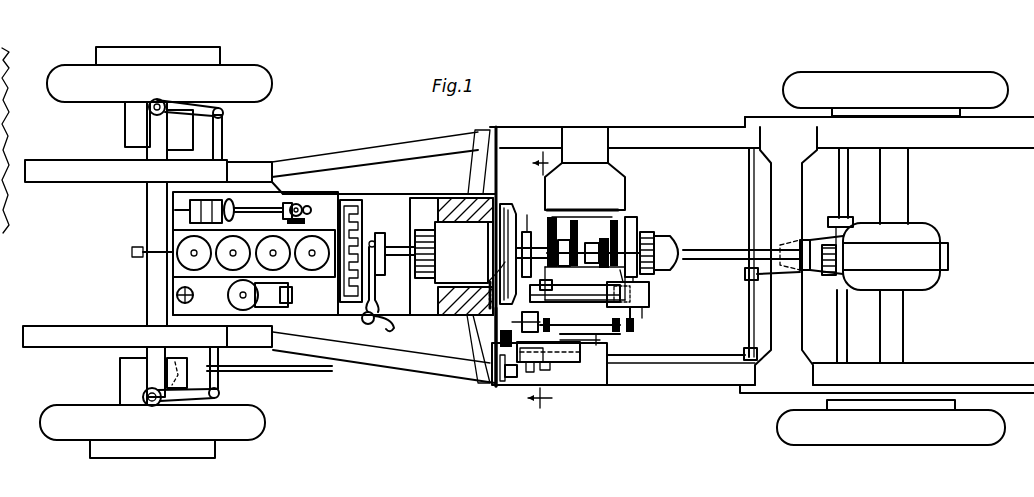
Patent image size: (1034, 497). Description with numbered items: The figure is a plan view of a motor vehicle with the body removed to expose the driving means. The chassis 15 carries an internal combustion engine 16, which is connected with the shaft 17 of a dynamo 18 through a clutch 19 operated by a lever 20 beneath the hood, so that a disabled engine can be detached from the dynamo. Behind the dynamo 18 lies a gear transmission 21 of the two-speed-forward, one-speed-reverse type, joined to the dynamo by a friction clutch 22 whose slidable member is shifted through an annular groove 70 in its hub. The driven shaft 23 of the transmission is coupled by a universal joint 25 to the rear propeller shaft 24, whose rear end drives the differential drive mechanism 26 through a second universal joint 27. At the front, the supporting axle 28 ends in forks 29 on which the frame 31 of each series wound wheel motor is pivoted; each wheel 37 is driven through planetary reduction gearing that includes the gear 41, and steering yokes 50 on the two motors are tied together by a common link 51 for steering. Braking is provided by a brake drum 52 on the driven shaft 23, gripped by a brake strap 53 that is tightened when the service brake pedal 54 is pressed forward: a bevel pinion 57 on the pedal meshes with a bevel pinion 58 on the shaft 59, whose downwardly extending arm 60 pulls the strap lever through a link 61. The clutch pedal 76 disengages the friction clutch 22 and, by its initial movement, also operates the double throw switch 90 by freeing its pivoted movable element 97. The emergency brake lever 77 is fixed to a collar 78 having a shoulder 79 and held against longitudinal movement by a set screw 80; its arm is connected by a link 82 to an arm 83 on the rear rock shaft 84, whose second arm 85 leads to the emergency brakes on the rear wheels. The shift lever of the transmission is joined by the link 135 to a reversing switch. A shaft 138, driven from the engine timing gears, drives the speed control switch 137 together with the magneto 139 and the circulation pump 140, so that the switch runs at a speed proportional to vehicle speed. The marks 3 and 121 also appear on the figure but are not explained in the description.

The section line 3 is at (540, 280).
The chassis 15 is at (643, 378).
The internal combustion engine 16 is at (300, 294).
The shaft 17 is at (395, 252).
The dynamo 18 is at (451, 256).
The clutch 19 is at (362, 208).
The lever 20 is at (394, 325).
The gear transmission 21 is at (615, 215).
The friction clutch 22 is at (503, 205).
The driven shaft 23 is at (653, 280).
The rear propeller shaft 24 is at (716, 243).
The universal joint 25 is at (656, 244).
The differential drive mechanism 26 is at (912, 265).
The universal joint 27 is at (811, 240).
The front supporting axle 28 is at (152, 296).
The fork 29 is at (158, 147).
The motor frame 31 is at (137, 118).
The wheel 37 is at (266, 88).
The gear 41 is at (493, 270).
The steering yoke 50 is at (212, 118).
The common link 51 is at (218, 383).
The brake drum 52 is at (650, 290).
The brake strap 53 is at (633, 226).
The service brake pedal 54 is at (497, 355).
The bevel pinion 57 is at (519, 329).
The bevel pinion 58 is at (580, 339).
The shaft 59 is at (590, 332).
The downwardly extending arm 60 is at (620, 335).
The link 61 is at (633, 318).
The annular groove 70 is at (531, 240).
The clutch pedal 76 is at (490, 383).
The emergency brake lever 77 is at (512, 387).
The collar 78 is at (540, 372).
The shoulder 79 is at (609, 342).
The set screw 80 is at (562, 354).
The link 82 is at (706, 355).
The arm 83 is at (758, 352).
The rock shaft 84 is at (749, 300).
The second arm 85 is at (758, 279).
The double throw switch 90 is at (662, 307).
The movable element 97 is at (545, 362).
The bracket 121 is at (614, 276).
The link 135 is at (575, 303).
The speed control switch 137 is at (297, 204).
The shaft 138 is at (250, 206).
The magneto 139 is at (190, 210).
The circulation pump 140 is at (232, 198).